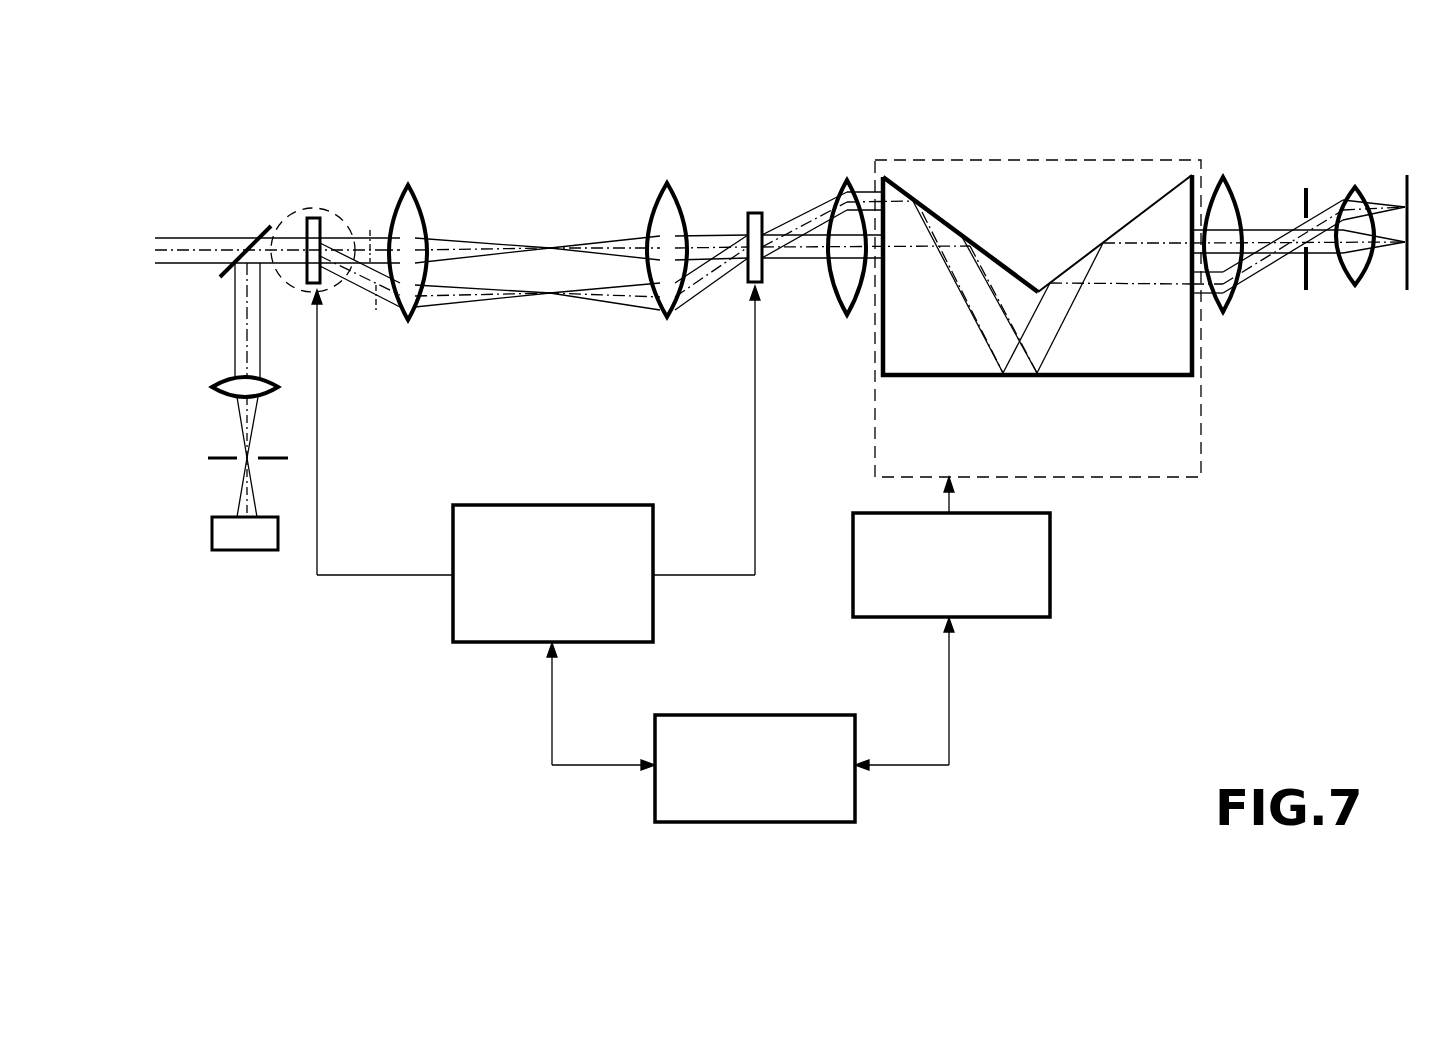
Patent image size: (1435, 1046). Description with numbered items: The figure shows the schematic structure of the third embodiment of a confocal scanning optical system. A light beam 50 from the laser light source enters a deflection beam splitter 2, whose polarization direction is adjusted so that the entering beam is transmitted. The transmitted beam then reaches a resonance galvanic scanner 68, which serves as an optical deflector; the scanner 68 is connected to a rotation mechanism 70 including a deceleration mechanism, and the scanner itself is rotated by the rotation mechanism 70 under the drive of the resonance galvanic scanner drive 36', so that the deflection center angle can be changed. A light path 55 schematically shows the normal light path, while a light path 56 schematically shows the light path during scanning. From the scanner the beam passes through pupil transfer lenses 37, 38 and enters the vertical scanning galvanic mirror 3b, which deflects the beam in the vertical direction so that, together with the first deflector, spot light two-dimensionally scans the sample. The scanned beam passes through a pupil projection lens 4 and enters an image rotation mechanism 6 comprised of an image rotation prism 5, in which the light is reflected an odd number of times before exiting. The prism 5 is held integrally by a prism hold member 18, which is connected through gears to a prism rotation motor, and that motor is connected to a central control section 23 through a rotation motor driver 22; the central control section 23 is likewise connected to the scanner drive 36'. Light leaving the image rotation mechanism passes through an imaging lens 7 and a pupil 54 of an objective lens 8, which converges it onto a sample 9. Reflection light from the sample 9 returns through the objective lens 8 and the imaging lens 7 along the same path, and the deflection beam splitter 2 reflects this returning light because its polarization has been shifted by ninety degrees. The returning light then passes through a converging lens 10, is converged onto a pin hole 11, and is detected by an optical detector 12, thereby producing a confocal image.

The light beam 50 is at (183, 238).
The deflection beam splitter 2 is at (261, 229).
The rotation mechanism 70 is at (296, 210).
The resonance galvanic scanner 68 is at (322, 290).
The normal light path 55 is at (370, 232).
The light path during scanning 56 is at (376, 314).
The pupil transfer lens 37 is at (410, 183).
The pupil transfer lens 38 is at (670, 183).
The vertical scanning galvanic mirror 3b is at (757, 212).
The pupil projection lens 4 is at (848, 178).
The image rotation prism 5 is at (1137, 350).
The image rotation mechanism 6 is at (1224, 430).
The imaging lens 7 is at (1224, 175).
The pupil of objective lens 54 is at (1306, 185).
The objective lens 8 is at (1357, 290).
The sample 9 is at (1407, 295).
The converging lens 10 is at (238, 386).
The pin hole 11 is at (206, 458).
The optical detector 12 is at (212, 537).
The prism hold member 18 is at (1168, 478).
The rotation motor driver 22 is at (1050, 590).
The central control section 23 is at (747, 715).
The resonance galvanic scanner drive 36' is at (553, 548).